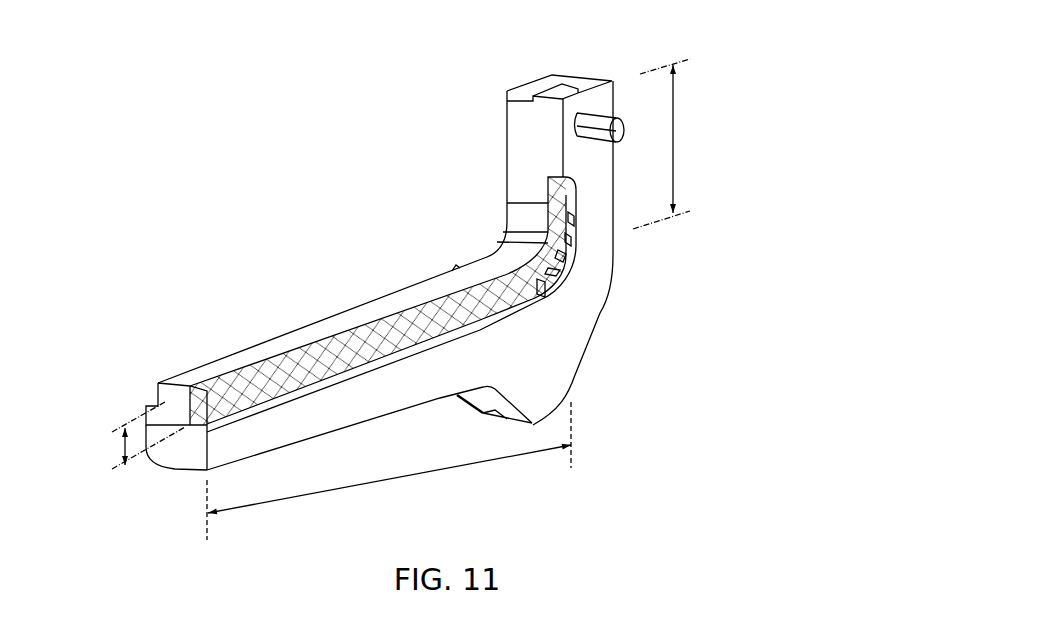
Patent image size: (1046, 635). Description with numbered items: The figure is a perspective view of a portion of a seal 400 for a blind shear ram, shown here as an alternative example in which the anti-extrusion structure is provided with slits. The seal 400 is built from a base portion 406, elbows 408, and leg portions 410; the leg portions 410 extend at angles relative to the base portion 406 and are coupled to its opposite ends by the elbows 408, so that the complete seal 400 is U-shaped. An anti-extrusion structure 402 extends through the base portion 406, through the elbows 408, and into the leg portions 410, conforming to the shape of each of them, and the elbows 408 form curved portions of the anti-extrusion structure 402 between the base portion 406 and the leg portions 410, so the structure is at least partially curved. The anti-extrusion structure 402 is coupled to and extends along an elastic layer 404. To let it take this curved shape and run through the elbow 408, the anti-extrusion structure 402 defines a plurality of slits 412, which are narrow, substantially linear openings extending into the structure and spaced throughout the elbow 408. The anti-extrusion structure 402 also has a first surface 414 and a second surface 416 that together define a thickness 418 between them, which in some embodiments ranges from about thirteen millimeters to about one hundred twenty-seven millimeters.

The seal 400 is at (594, 50).
The anti-extrusion structure 402 is at (223, 383).
The elastic layer 404 is at (470, 272).
The base portion 406 is at (383, 484).
The elbows 408 is at (622, 310).
The leg portions 410 is at (682, 140).
The slits 412 is at (573, 293).
The first surface 414 is at (300, 342).
The second surface 416 is at (188, 470).
The thickness 418 is at (117, 443).